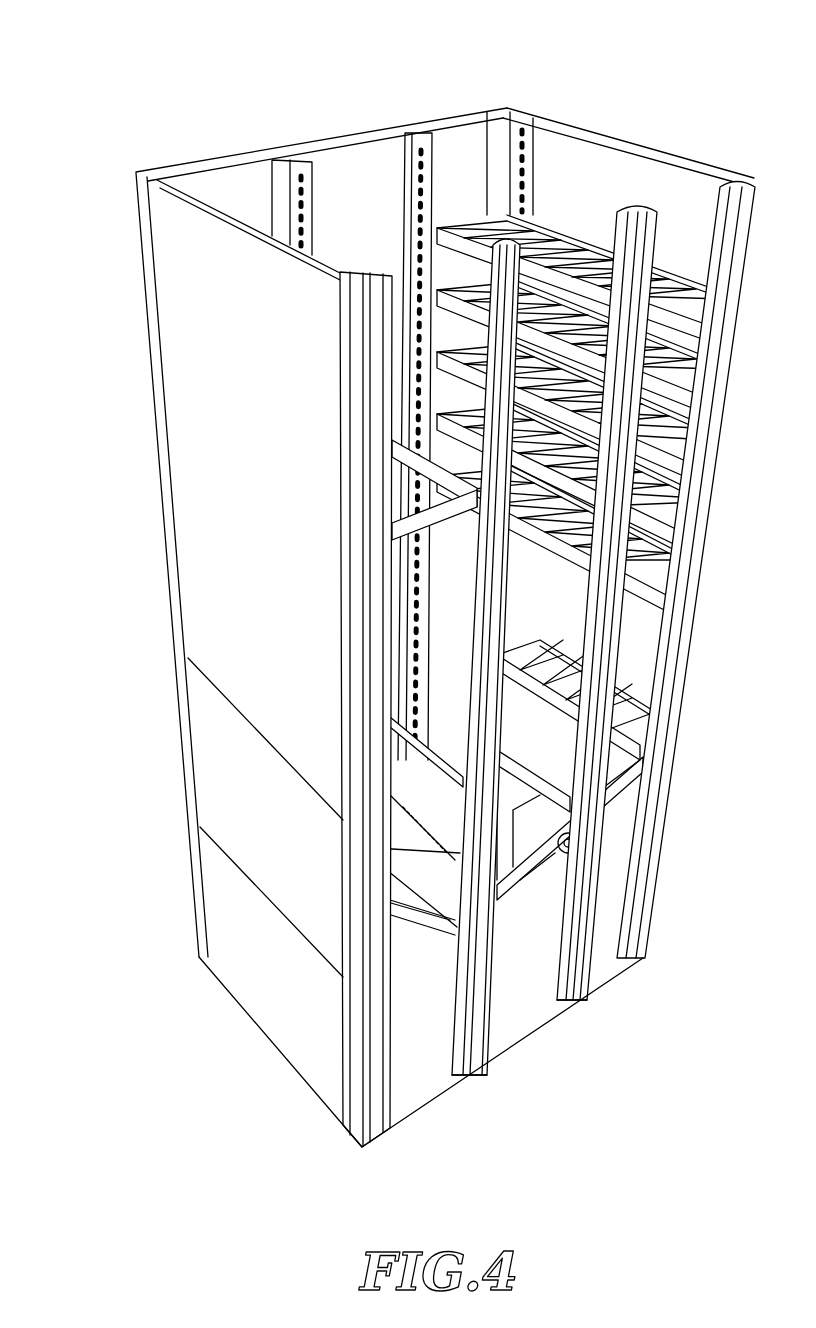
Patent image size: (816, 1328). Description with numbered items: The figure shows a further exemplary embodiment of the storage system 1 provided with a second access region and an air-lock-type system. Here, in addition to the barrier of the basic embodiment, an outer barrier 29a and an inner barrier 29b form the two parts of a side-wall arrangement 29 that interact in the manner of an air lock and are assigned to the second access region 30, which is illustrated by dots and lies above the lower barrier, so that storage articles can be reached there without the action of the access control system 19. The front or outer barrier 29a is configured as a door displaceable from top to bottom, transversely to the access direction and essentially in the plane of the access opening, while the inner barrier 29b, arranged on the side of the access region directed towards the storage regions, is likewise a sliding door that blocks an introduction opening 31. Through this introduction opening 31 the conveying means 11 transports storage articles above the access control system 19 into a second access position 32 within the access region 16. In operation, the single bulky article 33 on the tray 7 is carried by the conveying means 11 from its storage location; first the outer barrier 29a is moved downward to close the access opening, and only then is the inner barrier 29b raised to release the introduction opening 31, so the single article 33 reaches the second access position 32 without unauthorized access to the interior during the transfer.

The storage cabinet 1 is at (167, 140).
The tray 7 is at (550, 810).
The conveying means 11 is at (590, 950).
The second access region 16 is at (347, 963).
The access control system 19 is at (348, 878).
The side wall 29 is at (282, 875).
The outer barrier 29a is at (215, 784).
The inner barrier 29b is at (405, 760).
The second access region 30 is at (470, 960).
The introduction opening 31 is at (468, 985).
The second access position 32 is at (410, 930).
The single bulky article 33 is at (350, 845).